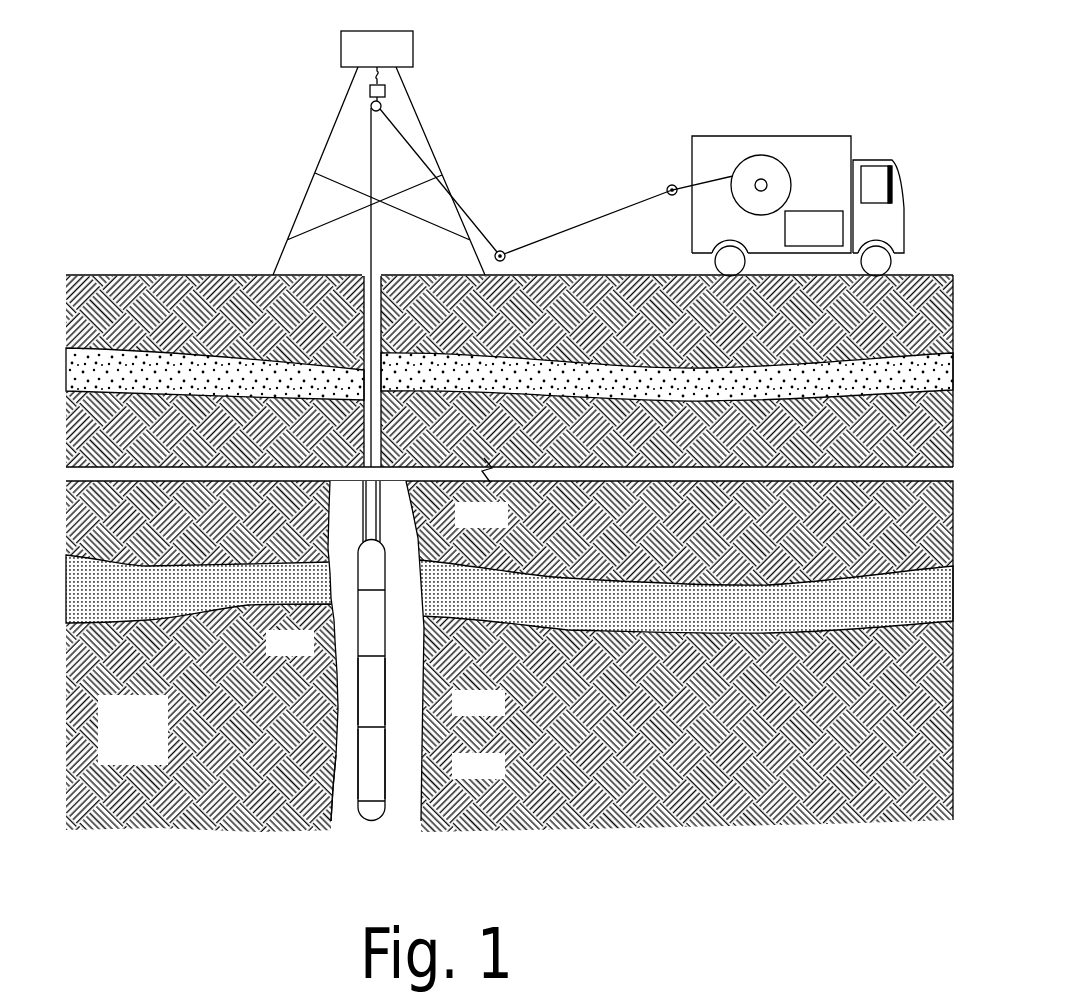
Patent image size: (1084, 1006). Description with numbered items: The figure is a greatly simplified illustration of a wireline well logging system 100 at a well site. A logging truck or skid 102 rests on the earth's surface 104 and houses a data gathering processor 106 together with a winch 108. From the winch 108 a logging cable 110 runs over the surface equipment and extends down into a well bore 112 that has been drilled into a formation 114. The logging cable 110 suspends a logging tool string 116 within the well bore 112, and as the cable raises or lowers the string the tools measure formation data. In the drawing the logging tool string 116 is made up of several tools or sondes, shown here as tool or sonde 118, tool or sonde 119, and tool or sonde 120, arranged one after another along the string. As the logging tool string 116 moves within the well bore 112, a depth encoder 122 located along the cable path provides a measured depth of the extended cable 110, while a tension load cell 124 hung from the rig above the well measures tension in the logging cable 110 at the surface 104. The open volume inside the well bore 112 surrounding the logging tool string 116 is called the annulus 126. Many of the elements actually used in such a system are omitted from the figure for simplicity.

The wireline well logging system 100 is at (756, 68).
The logging truck or skid 102 is at (790, 128).
The earth's surface 104 is at (140, 267).
The data gathering processor 106 is at (825, 232).
The winch 108 is at (738, 153).
The logging cable 110 is at (602, 210).
The well bore 112 is at (358, 268).
The formation 114 is at (142, 734).
The logging tool string 116 is at (378, 543).
The tool or sonde 118 is at (350, 620).
The tool or sonde 119 is at (377, 689).
The tool or sonde 120 is at (377, 751).
The depth encoder 122 is at (660, 178).
The tension load cell 124 is at (380, 80).
The annulus 126 is at (400, 810).